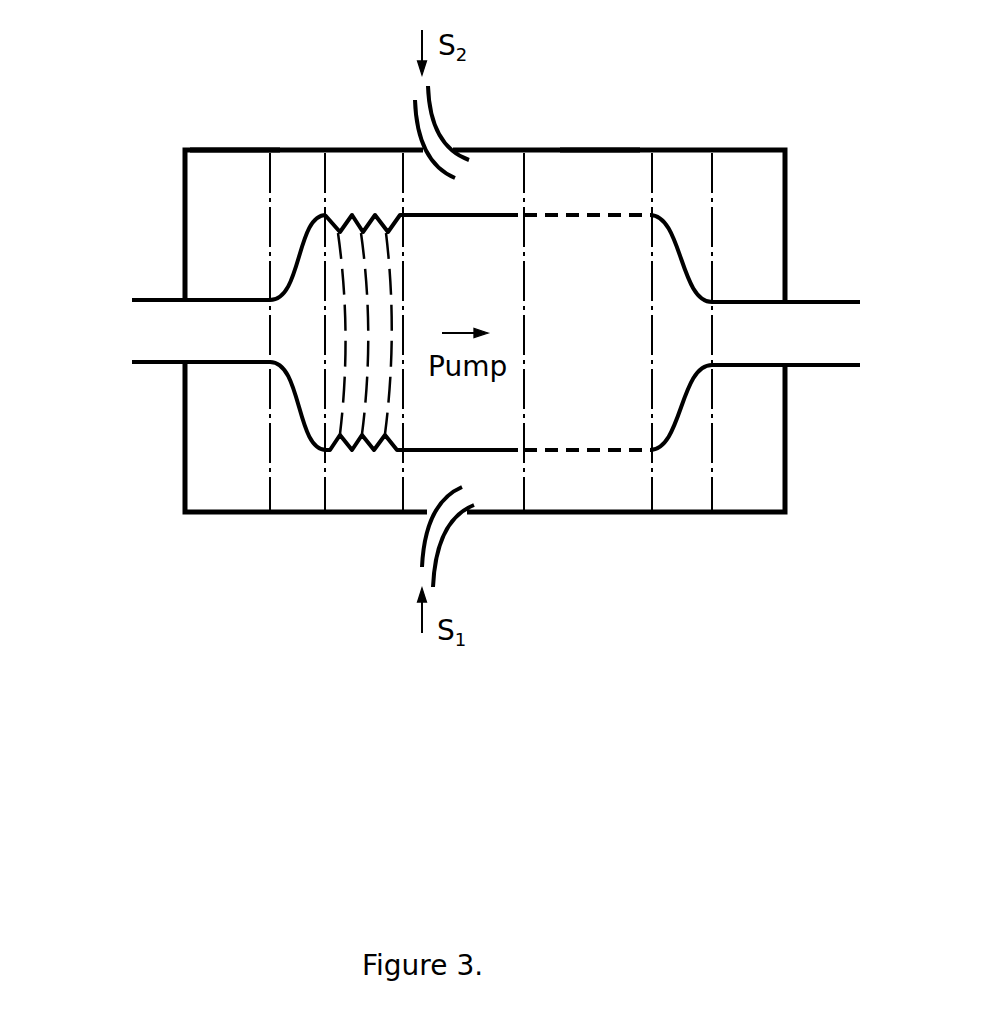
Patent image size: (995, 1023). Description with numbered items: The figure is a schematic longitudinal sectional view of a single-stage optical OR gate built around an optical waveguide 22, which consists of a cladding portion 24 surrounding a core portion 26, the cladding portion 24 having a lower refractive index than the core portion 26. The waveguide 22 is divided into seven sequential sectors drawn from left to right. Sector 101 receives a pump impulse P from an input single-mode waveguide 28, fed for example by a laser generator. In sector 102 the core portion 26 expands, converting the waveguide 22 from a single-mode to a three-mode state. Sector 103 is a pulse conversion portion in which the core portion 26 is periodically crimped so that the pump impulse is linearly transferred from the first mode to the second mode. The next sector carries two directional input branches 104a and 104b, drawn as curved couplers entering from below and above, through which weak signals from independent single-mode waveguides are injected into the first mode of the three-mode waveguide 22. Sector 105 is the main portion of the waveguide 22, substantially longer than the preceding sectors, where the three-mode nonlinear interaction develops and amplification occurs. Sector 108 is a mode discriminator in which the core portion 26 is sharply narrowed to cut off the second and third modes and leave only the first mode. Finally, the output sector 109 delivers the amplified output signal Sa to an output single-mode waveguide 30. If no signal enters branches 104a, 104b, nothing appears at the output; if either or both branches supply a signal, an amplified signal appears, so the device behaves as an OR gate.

The optical waveguide 22 is at (233, 134).
The cladding portion 24 is at (600, 134).
The core portion 26 is at (585, 334).
The input single-mode waveguide 28 is at (138, 330).
The output single-mode waveguide 30 is at (822, 335).
The sector 101 is at (201, 355).
The sector 102 is at (298, 355).
The pulse conversion portion 103 is at (364, 355).
The directional input branch 104a is at (460, 518).
The directional input branch 104b is at (463, 298).
The main portion of waveguide 105 is at (588, 356).
The mode discriminator 108 is at (681, 356).
The output sector 109 is at (786, 431).